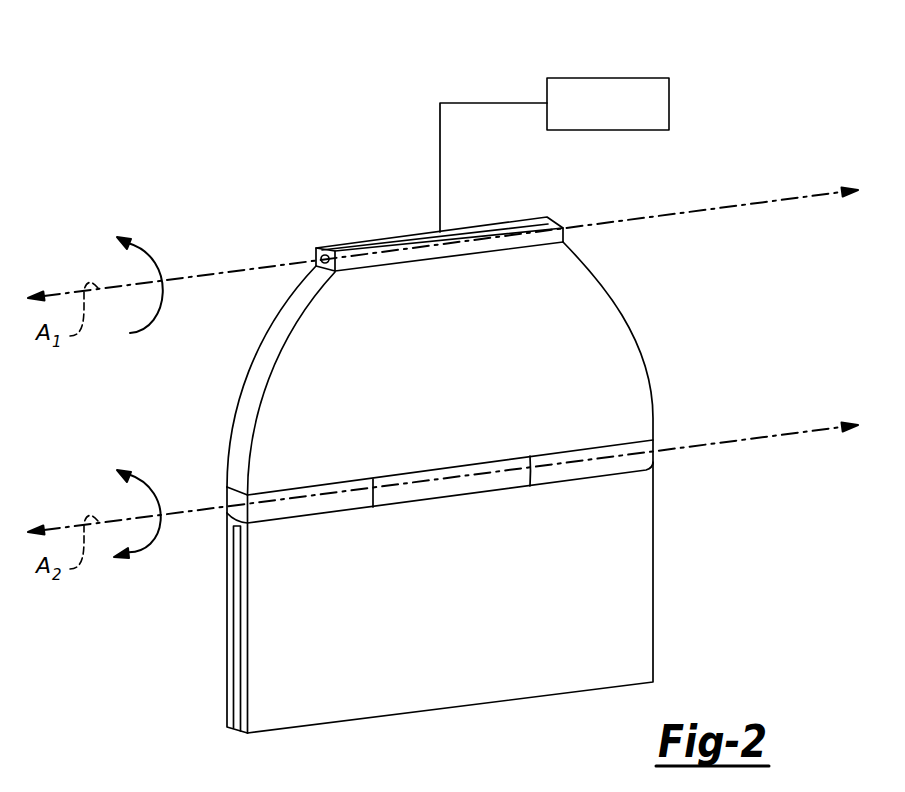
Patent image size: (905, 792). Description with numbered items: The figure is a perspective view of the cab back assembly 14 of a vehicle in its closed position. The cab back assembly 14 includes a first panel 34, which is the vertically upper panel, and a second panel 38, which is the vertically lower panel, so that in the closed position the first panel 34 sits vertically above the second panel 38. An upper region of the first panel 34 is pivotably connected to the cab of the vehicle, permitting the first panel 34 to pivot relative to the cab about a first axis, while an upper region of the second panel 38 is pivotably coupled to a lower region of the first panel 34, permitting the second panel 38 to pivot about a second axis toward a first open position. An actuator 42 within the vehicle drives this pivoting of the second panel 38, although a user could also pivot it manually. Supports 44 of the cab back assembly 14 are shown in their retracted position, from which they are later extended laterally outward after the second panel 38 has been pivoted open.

The cab back assembly 14 is at (291, 204).
The first panel 34 is at (603, 343).
The second panel 38 is at (398, 682).
The actuator 42 is at (625, 78).
The supports 44 is at (240, 642).